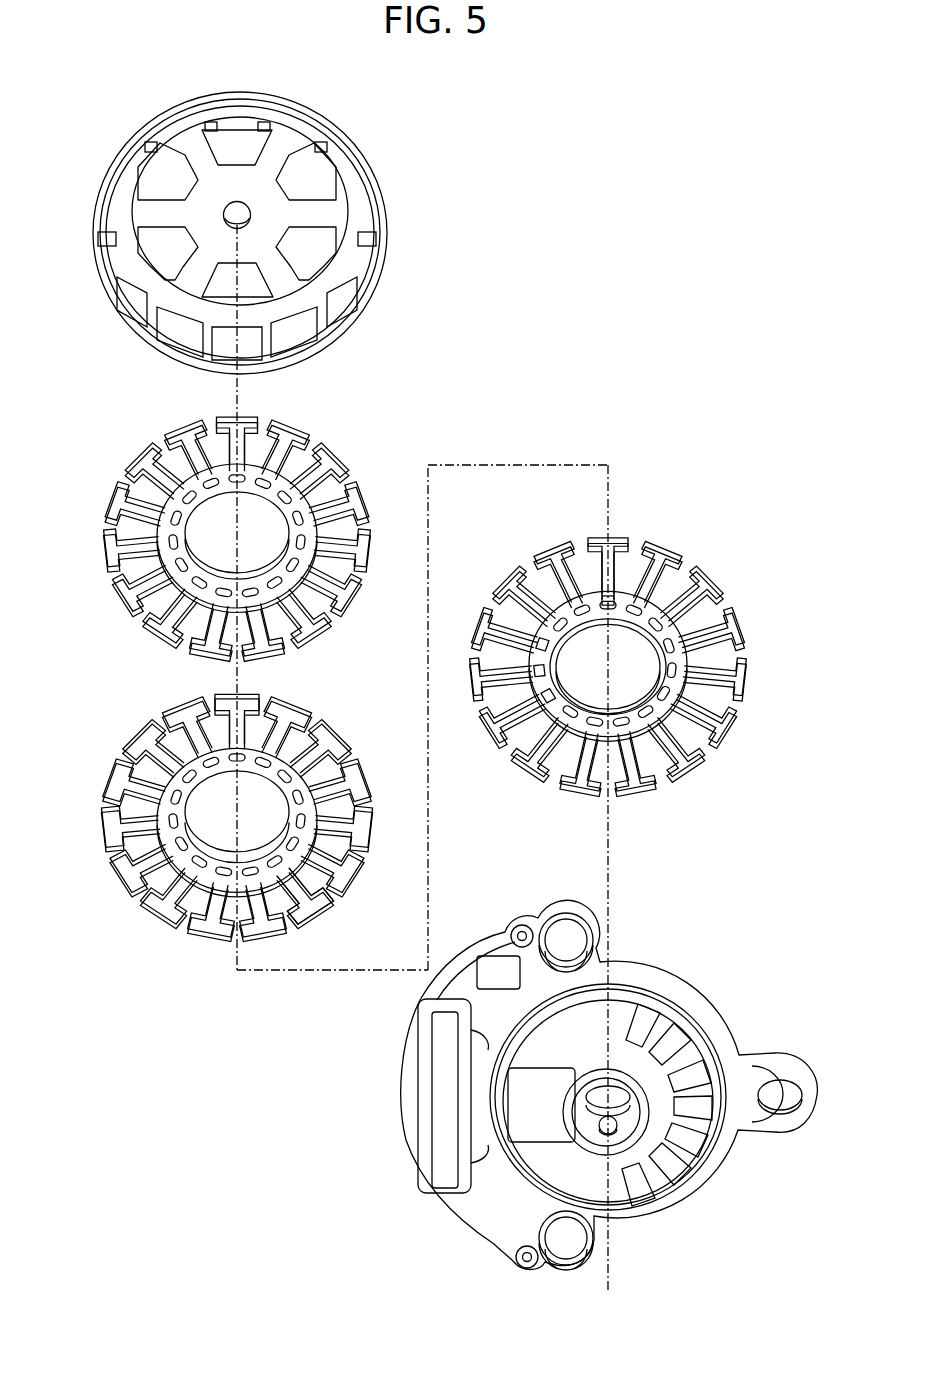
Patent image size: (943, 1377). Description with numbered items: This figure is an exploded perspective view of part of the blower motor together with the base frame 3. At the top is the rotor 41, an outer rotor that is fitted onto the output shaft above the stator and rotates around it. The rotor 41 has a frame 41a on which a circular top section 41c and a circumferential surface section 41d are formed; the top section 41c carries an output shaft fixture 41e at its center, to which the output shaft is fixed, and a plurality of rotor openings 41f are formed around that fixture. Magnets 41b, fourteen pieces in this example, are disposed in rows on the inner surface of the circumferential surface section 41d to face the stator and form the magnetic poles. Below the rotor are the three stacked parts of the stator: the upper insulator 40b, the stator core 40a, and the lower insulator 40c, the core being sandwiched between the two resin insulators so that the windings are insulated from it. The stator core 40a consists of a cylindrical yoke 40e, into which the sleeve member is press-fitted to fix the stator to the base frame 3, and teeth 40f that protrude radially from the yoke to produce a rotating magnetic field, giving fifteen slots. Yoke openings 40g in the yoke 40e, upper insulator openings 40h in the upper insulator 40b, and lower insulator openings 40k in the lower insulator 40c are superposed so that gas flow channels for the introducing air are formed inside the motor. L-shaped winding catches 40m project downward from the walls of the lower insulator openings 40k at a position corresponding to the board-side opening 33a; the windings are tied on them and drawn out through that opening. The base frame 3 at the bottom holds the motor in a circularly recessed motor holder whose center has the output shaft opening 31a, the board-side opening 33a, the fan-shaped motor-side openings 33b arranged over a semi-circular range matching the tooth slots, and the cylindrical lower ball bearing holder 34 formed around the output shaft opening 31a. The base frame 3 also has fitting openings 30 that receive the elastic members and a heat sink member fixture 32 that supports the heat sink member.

The base frame 3 is at (599, 1059).
The fitting openings 30 is at (563, 932).
The output shaft opening 31a is at (618, 1106).
The heat sink member fixture 32 is at (445, 1120).
The board-side opening 33a is at (545, 1085).
The motor-side openings 33b is at (703, 1143).
The lower ball bearing holder 34 is at (632, 1108).
The stator core 40a is at (219, 815).
The upper insulator 40b is at (215, 521).
The lower insulator 40c is at (605, 636).
The yoke 40e is at (183, 860).
The teeth 40f is at (307, 907).
The yoke openings 40g is at (263, 790).
The upper insulator openings 40h is at (293, 502).
The lower insulator openings 40k is at (665, 640).
The winding catches 40m is at (545, 696).
The rotor 41 is at (249, 206).
The frame 41a is at (386, 179).
The magnets 41b is at (135, 302).
The top section 41c is at (161, 213).
The circumferential surface section 41d is at (150, 124).
The output shaft fixture 41e is at (251, 212).
The rotor openings 41f is at (302, 152).